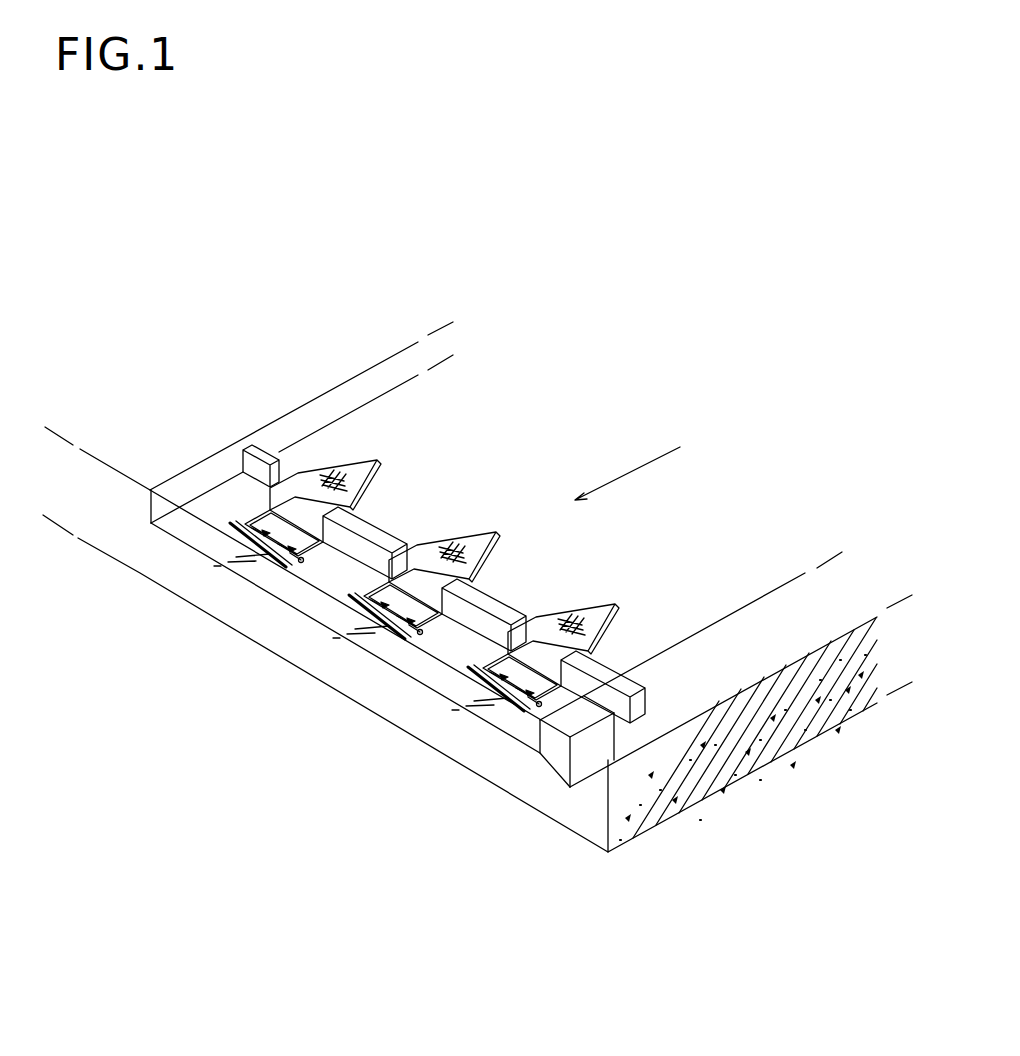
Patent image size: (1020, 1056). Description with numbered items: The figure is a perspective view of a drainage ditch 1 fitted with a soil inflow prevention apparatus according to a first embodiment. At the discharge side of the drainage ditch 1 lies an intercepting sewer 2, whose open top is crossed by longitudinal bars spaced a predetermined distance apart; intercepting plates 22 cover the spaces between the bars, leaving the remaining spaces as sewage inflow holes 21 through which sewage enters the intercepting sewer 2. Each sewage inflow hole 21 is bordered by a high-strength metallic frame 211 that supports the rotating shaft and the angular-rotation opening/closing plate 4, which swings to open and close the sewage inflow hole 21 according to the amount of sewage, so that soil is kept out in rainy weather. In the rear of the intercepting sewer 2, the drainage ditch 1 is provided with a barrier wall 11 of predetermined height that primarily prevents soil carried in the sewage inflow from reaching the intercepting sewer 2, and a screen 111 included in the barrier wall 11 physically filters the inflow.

The drainage ditch 1 is at (704, 595).
The intercepting sewer 2 is at (477, 727).
The angular-rotation opening/closing plate 4 is at (263, 547).
The barrier wall 11 is at (395, 515).
The screen 111 is at (352, 477).
The sewage inflow hole 21 is at (410, 597).
The metallic frame 211 is at (288, 520).
The intercepting plate 22 is at (217, 505).